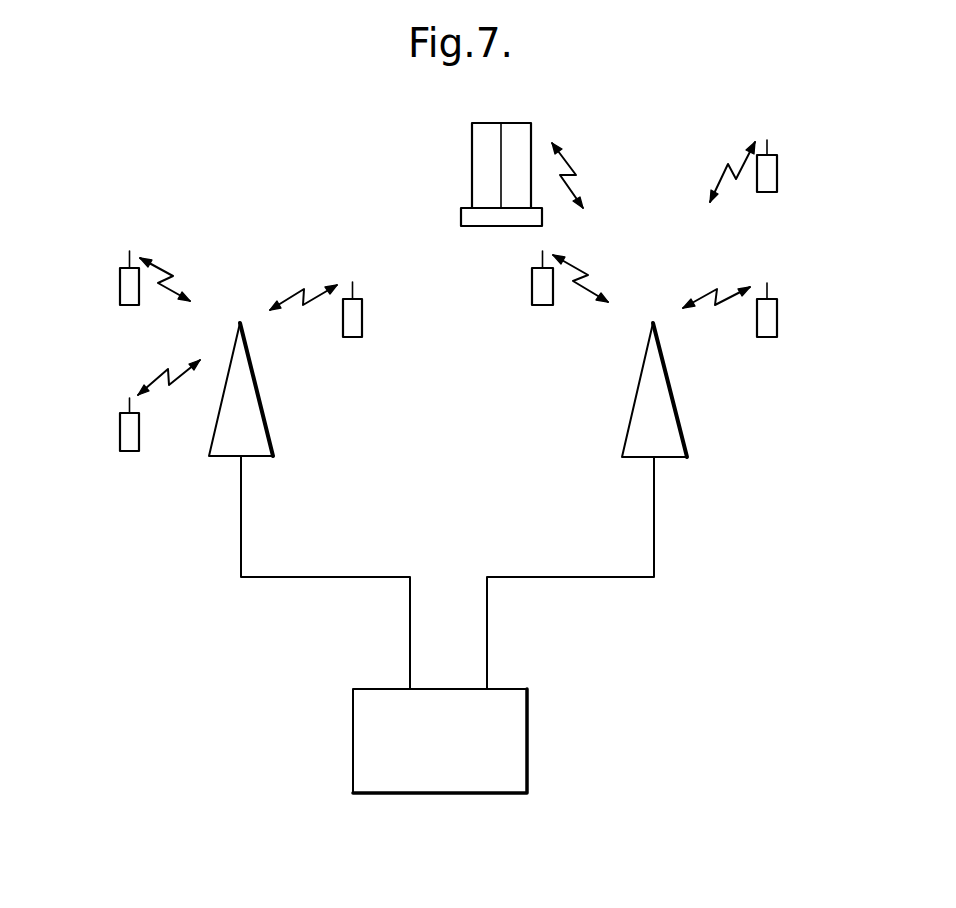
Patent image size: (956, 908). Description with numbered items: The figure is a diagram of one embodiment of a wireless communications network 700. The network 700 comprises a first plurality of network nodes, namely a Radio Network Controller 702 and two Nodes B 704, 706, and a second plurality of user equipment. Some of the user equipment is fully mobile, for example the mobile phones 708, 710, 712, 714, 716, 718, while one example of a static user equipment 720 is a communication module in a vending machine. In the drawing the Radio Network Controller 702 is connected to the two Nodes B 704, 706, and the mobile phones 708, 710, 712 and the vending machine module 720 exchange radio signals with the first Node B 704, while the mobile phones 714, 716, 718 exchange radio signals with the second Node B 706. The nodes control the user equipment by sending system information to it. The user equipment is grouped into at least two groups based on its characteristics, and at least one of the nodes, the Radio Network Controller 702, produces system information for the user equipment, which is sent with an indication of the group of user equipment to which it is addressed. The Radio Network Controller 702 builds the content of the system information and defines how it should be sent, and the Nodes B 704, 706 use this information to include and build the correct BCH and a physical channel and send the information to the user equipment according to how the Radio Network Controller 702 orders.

The wireless communications network 700 is at (757, 735).
The Radio Network Controller 702 is at (518, 719).
The Node B 704 is at (225, 450).
The Node B 706 is at (680, 451).
The mobile user equipment 708 is at (122, 437).
The mobile user equipment 710 is at (122, 295).
The mobile user equipment 712 is at (356, 326).
The mobile user equipment 714 is at (535, 296).
The mobile user equipment 716 is at (771, 172).
The mobile user equipment 718 is at (771, 314).
The static user equipment 720 is at (476, 153).